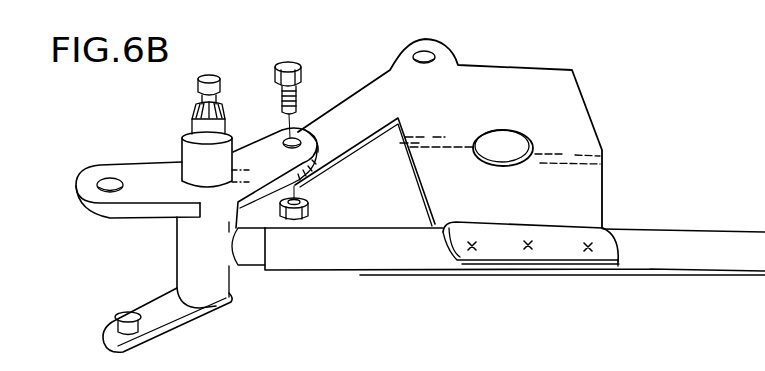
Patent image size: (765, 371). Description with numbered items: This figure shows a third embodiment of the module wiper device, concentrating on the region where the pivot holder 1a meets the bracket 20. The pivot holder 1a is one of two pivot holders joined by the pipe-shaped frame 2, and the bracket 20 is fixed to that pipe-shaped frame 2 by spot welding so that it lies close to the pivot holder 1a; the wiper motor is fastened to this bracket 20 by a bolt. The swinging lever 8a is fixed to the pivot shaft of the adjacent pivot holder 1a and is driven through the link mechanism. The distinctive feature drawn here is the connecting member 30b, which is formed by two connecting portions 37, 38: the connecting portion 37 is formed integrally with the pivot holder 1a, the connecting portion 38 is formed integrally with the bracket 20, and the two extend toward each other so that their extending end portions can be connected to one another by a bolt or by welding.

The pivot holder 1a is at (187, 157).
The pipe-shaped frame 2 is at (298, 258).
The swinging lever 8a is at (172, 319).
The bracket 20 is at (578, 107).
The connecting member 30b is at (345, 56).
The connecting portion 37 is at (258, 155).
The connecting portion 38 is at (350, 118).